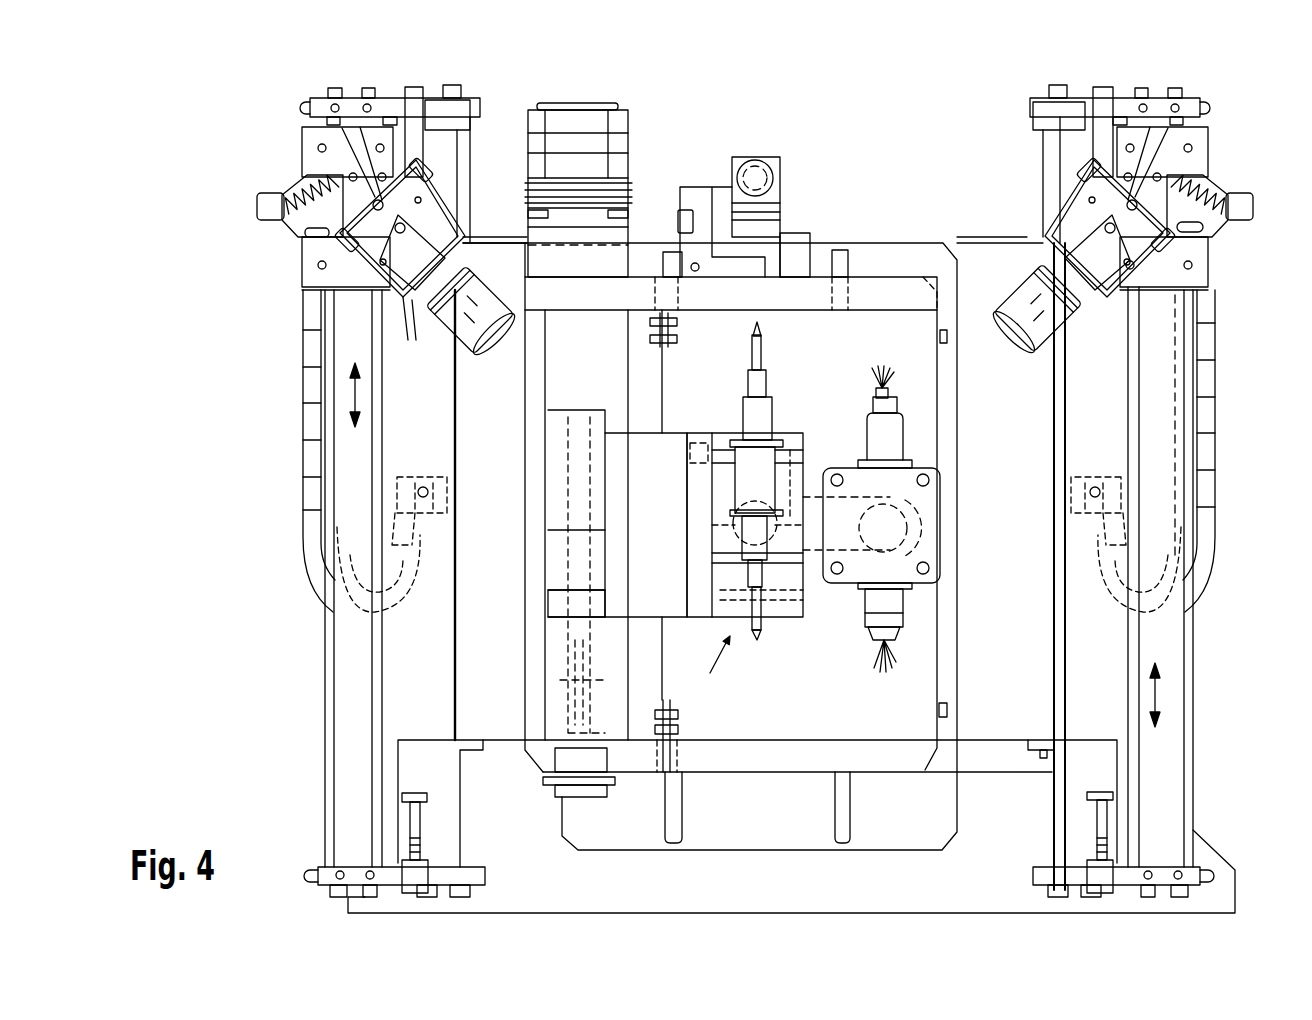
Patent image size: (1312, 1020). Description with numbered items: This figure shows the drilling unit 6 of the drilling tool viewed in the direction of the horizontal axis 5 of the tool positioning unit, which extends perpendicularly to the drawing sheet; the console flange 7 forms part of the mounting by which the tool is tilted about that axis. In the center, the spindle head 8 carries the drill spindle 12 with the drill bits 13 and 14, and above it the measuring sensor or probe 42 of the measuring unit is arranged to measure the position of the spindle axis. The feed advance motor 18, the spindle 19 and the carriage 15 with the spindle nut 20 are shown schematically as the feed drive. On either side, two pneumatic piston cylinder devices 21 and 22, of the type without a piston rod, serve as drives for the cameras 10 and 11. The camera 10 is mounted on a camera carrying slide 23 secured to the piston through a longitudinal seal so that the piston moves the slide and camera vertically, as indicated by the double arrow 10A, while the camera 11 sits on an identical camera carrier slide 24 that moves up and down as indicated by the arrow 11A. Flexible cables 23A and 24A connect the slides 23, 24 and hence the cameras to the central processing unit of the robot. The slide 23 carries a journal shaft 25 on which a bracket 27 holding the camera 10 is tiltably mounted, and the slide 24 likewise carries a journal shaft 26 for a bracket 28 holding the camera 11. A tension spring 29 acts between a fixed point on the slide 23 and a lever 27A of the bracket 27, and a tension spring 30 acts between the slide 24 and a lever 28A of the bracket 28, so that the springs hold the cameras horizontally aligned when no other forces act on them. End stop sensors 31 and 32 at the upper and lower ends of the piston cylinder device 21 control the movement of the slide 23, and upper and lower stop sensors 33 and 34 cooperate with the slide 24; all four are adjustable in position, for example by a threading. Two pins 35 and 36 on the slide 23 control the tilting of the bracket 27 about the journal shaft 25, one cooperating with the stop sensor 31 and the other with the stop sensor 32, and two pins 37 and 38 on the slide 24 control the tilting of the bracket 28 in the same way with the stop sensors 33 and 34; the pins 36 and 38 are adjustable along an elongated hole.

The horizontal axis 5 is at (757, 482).
The drilling unit 6 is at (710, 666).
The flange 7 is at (1218, 865).
The spindle head 8 is at (770, 483).
The camera 10 is at (497, 297).
The double arrow 10A is at (350, 398).
The camera 11 is at (1023, 293).
The arrow 11A is at (1185, 700).
The drill spindle 12 is at (763, 387).
The drill bit 13 is at (753, 350).
The drill bit 14 is at (765, 632).
The carriage 15 is at (617, 510).
The feed advance motor 18 is at (588, 127).
The spindle 19 is at (570, 693).
The spindle nut 20 is at (563, 592).
The pneumatic piston cylinder device 21 is at (327, 835).
The pneumatic piston cylinder device 22 is at (1207, 630).
The camera carrying slide 23 is at (310, 130).
The flexible cable 23A is at (310, 548).
The camera carrier slide 24 is at (1200, 148).
The flexible cable 24A is at (1202, 490).
The journal shaft 25 is at (378, 203).
The journal shaft 26 is at (1163, 163).
The bracket 27 is at (414, 318).
The lever 27A is at (370, 177).
The bracket 28 is at (1142, 310).
The lever 28A is at (1215, 228).
The tension spring 29 is at (283, 177).
The tension spring 30 is at (1215, 175).
The end stop sensor 31 is at (423, 137).
The end stop sensor 32 is at (403, 797).
The stop sensor 33 is at (1117, 105).
The stop sensor 34 is at (1110, 790).
The pin 35 is at (363, 260).
The pin 36 is at (417, 207).
The pin 37 is at (1083, 190).
The pin 38 is at (1180, 280).
The measuring sensor or probe 42 is at (753, 172).